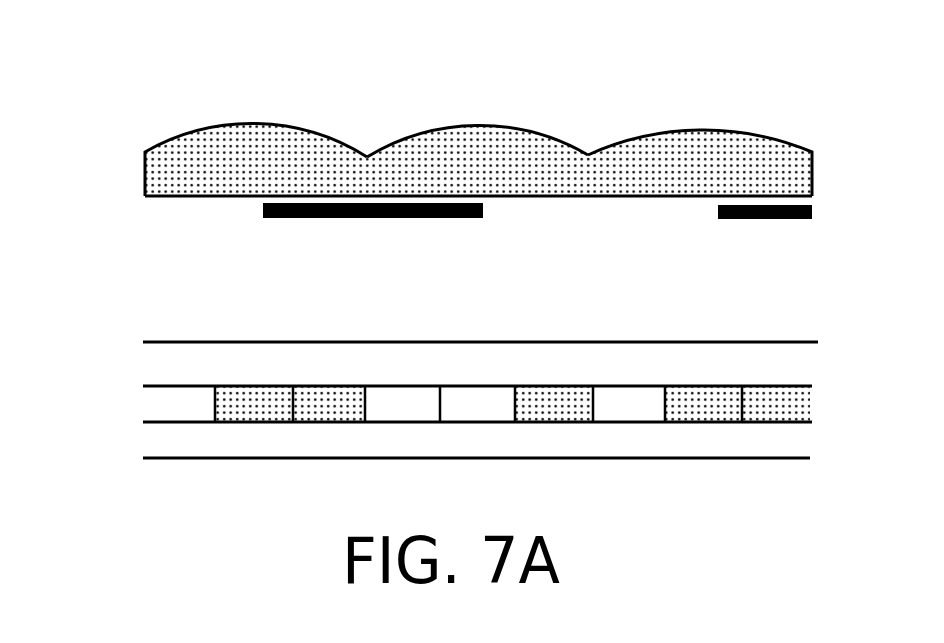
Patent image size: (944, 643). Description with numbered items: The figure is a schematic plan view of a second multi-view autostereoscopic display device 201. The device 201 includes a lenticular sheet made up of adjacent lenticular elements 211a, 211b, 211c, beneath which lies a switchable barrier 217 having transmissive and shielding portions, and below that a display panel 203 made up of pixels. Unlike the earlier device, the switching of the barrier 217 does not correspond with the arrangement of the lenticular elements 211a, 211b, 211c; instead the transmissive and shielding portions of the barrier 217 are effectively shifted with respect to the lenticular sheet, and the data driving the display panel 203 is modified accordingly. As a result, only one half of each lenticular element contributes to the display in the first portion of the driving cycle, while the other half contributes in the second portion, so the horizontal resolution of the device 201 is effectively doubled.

The multi-view autostereoscopic display device 201 is at (140, 73).
The lenticular element 211a is at (258, 123).
The lenticular element 211b is at (438, 130).
The lenticular element 211c is at (668, 130).
The barrier 217 is at (263, 208).
The display panel 203 is at (143, 405).